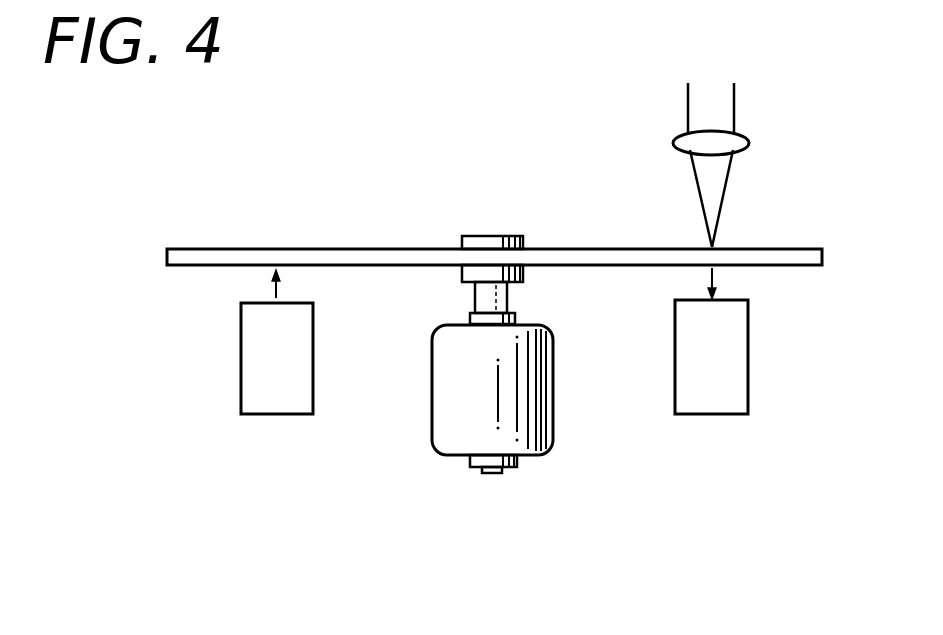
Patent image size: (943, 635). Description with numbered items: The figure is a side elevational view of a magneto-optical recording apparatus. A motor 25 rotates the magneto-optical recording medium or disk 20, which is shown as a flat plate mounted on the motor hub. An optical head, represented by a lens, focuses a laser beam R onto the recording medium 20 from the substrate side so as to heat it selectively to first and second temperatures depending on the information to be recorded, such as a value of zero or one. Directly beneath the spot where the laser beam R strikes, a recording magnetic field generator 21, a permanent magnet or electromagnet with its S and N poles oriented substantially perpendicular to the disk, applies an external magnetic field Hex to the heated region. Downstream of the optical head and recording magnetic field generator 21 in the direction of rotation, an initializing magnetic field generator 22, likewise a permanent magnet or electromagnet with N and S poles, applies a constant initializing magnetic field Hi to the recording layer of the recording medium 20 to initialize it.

The magneto-optical recording medium 20 is at (266, 247).
The recording magnetic field generator 21 is at (748, 365).
The initializing magnetic field generator 22 is at (277, 414).
The motor 25 is at (553, 438).
The laser beam R is at (727, 187).
The initializing magnetic field Hi is at (278, 282).
The external magnetic field Hex is at (714, 272).